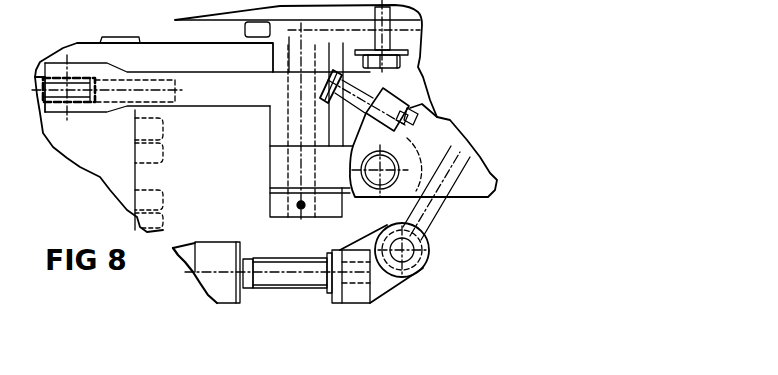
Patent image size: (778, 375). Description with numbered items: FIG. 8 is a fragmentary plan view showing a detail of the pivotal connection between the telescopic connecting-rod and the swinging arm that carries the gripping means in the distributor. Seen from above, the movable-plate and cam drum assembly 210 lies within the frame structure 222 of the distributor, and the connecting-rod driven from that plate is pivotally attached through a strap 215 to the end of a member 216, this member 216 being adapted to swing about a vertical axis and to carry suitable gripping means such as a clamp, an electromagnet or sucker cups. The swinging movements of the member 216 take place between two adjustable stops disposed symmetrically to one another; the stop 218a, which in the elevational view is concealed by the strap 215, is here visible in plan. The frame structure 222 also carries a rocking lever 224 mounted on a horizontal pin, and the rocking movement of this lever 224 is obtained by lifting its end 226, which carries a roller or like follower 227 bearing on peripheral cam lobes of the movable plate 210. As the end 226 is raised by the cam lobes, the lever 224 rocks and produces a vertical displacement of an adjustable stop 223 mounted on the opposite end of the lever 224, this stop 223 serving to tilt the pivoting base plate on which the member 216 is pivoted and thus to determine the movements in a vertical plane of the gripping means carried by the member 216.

The movable-plate and cam drum assembly 210 is at (98, 172).
The strap 215 is at (380, 288).
The member 216 is at (422, 122).
The stop 218a is at (412, 108).
The frame structure 222 is at (398, 18).
The adjustable stop 223 is at (371, 195).
The rocking lever 224 is at (217, 90).
The end 226 is at (62, 110).
The roller 227 is at (62, 88).